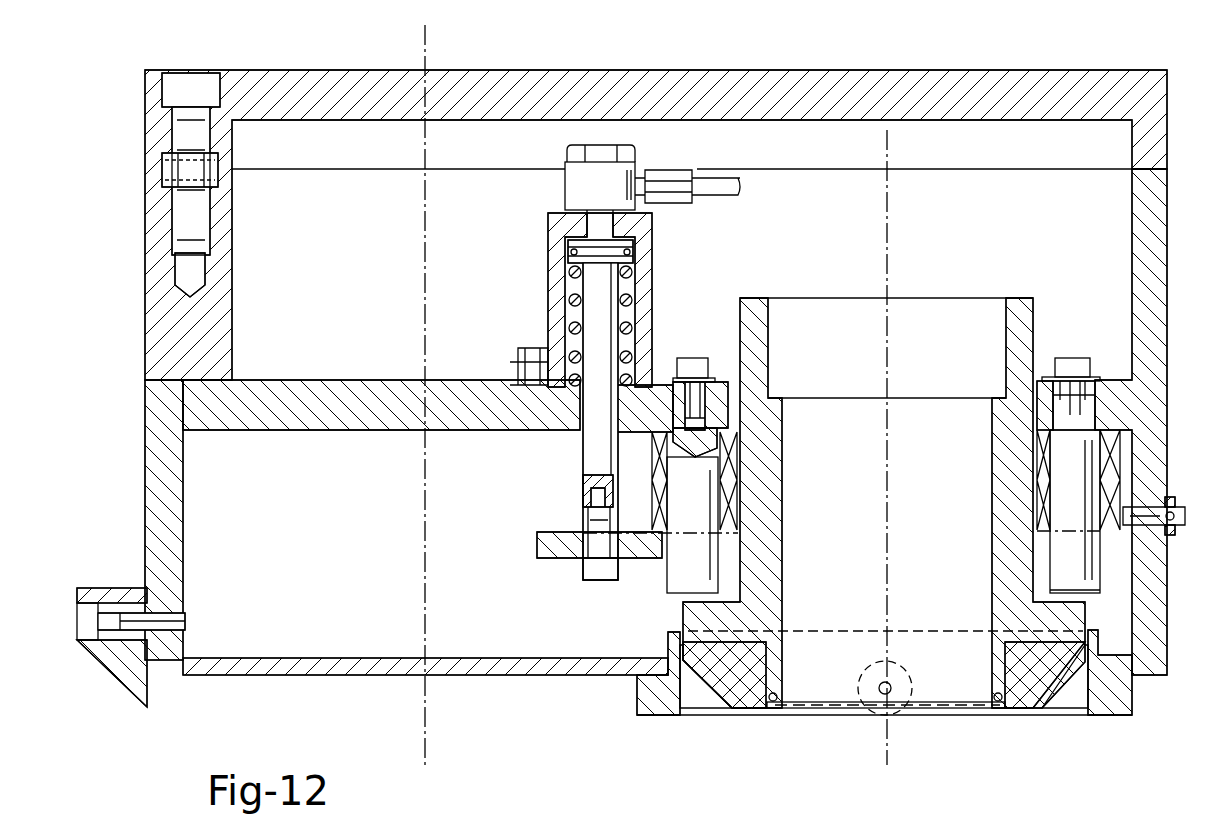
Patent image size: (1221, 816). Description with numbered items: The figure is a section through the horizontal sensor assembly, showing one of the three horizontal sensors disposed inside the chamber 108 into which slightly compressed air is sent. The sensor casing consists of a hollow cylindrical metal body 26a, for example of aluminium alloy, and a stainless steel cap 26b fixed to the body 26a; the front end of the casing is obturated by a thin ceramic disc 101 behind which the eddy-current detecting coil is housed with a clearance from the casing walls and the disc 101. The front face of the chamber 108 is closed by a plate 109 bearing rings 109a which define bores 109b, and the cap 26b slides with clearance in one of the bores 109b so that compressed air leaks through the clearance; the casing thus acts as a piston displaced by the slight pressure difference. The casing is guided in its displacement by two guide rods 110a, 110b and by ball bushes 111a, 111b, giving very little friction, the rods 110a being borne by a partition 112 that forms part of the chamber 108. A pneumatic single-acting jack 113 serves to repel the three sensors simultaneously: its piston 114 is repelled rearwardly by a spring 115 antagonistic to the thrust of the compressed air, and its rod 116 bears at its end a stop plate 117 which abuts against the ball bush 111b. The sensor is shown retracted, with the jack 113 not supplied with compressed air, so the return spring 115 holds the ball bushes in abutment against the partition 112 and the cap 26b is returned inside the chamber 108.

The chamber 108 is at (1147, 85).
The plate 109 is at (516, 673).
The ring 109a is at (1134, 704).
The bore 109b is at (1073, 703).
The hollow cylindrical metal body 26a is at (1020, 318).
The cap 26b is at (1027, 697).
The thin ceramic disc 101 is at (940, 710).
The partition 112 is at (285, 415).
The pneumatic single-acting jack 113 is at (541, 296).
The piston 114 is at (637, 260).
The spring 115 is at (635, 297).
The rod 116 is at (590, 451).
The stop plate 117 is at (537, 541).
The ball bush 111b is at (665, 475).
The guide rod 110b is at (678, 570).
The ball bush 111a is at (1110, 473).
The guide rod 110a is at (1070, 556).